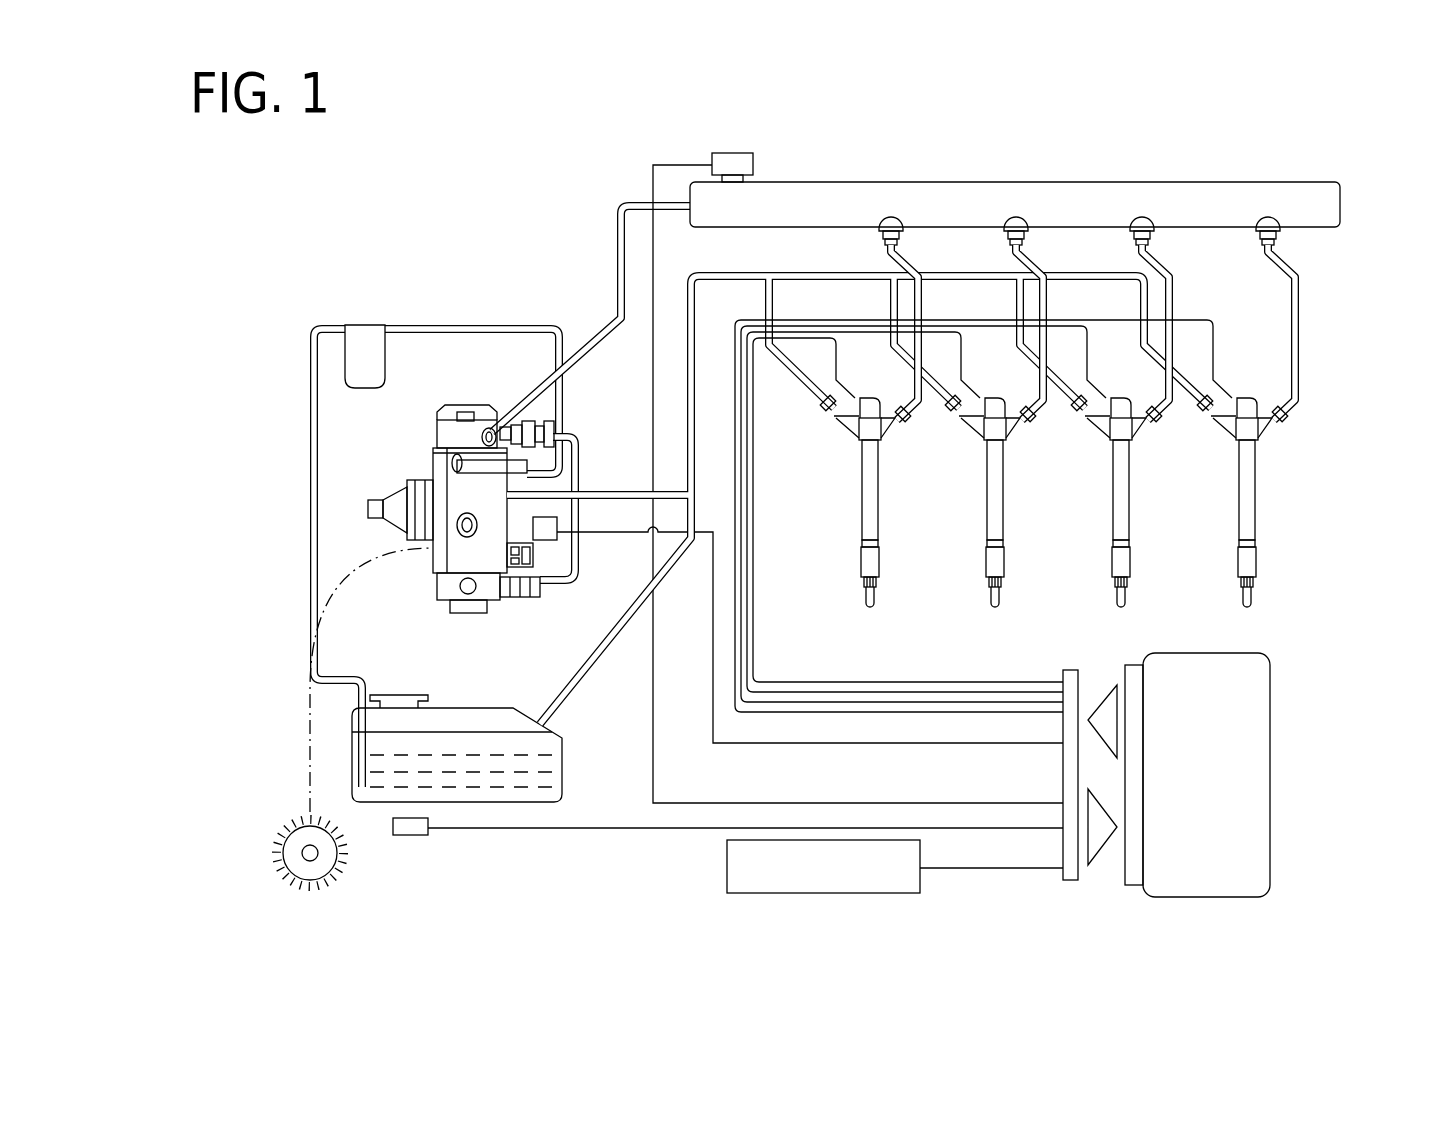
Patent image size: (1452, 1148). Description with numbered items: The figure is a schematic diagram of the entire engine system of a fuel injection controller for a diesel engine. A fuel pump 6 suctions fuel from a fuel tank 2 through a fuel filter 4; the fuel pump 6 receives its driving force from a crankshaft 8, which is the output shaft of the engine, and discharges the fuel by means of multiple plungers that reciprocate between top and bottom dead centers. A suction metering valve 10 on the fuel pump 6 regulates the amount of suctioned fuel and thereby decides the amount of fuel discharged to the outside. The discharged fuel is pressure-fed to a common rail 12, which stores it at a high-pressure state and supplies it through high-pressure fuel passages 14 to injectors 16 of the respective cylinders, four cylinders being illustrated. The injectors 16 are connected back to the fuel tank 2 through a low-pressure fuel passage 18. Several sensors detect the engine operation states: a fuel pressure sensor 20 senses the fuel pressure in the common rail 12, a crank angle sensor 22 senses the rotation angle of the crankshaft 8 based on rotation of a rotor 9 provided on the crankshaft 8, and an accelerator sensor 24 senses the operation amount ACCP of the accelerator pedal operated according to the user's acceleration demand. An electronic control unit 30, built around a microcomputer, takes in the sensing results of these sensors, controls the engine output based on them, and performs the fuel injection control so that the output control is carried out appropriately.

The fuel tank 2 is at (470, 706).
The fuel filter 4 is at (380, 360).
The fuel pump 6 is at (470, 410).
The crankshaft 8 is at (311, 858).
The rotor 9 is at (272, 848).
The suction metering valve 10 is at (560, 520).
The common rail 12 is at (1098, 190).
The high-pressure fuel passages 14 is at (925, 298).
The injectors 16 is at (879, 490).
The low-pressure fuel passage 18 is at (722, 274).
The fuel pressure sensor 20 is at (742, 153).
The crank angle sensor 22 is at (410, 838).
The accelerator sensor 24 is at (838, 895).
The electronic control unit 30 is at (1272, 714).